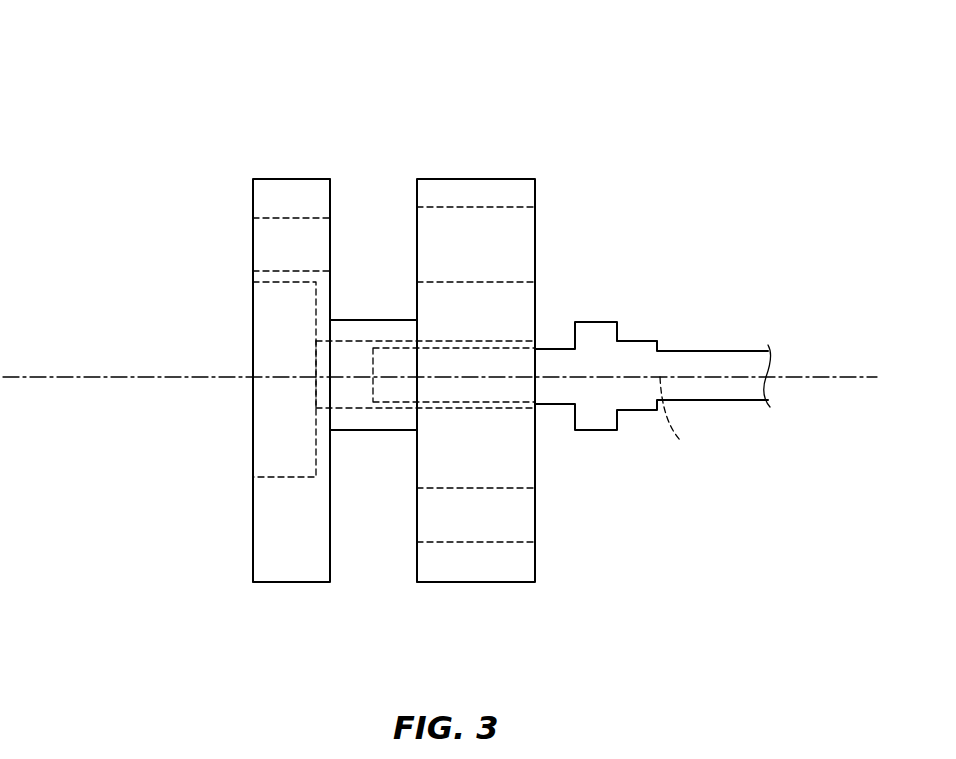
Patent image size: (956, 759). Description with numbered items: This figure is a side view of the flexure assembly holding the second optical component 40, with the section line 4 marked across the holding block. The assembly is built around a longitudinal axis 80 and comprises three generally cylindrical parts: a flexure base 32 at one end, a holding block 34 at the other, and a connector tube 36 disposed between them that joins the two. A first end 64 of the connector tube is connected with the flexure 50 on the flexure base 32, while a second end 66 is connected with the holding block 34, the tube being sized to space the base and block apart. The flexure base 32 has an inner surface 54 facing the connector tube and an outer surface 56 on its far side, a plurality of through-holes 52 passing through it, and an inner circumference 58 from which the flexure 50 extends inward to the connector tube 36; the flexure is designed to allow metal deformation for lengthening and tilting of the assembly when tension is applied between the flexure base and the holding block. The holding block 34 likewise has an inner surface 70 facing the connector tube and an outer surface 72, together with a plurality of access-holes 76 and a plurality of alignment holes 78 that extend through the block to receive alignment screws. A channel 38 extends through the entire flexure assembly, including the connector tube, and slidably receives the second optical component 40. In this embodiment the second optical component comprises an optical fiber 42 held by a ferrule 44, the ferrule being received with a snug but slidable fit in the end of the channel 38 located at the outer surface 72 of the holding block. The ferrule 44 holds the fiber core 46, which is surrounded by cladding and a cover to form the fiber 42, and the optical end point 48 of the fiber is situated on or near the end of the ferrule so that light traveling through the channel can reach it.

The section line 4- 4 is at (578, 93).
The flexure base 32 is at (256, 144).
The holding block 34 is at (548, 161).
The connector tube 36 is at (372, 321).
The channel 38 is at (510, 410).
The second optical component 40 is at (658, 357).
The optical fiber 42 is at (690, 351).
The ferrule 44 is at (629, 347).
The fiber core 46 is at (668, 378).
The optical end point 48 is at (372, 380).
The flexure 50 is at (320, 438).
The through-holes 52 is at (285, 218).
The inner surface 54 is at (331, 190).
The outer surface 56 is at (253, 555).
The inner circumference 58 is at (265, 477).
The first end 64 is at (332, 320).
The second end 66 is at (414, 322).
The inner surface 70 is at (417, 555).
The outer surface 72 is at (537, 295).
The access-holes 76 is at (515, 207).
The alignment holes 78 is at (516, 543).
The longitudinal axis 80 is at (72, 377).